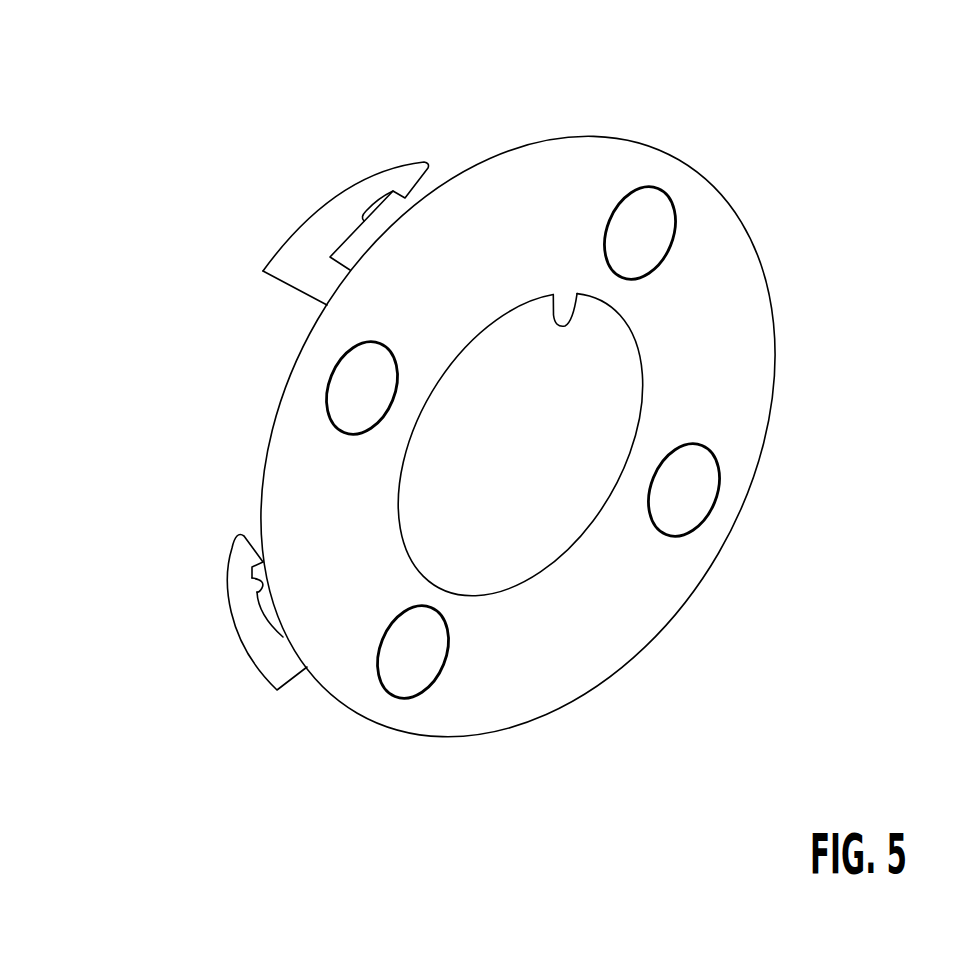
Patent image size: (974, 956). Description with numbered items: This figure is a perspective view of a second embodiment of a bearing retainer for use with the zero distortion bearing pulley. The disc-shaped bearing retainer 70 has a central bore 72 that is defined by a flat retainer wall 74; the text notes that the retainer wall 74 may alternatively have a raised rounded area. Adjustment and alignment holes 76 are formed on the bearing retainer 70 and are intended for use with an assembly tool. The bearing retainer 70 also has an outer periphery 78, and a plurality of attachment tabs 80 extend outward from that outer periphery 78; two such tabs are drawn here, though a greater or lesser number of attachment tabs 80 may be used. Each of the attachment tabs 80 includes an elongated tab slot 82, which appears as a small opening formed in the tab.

The bearing retainer 70 is at (534, 415).
The central bore 72 is at (562, 318).
The retainer wall 74 is at (578, 538).
The adjustment and alignment holes 76 is at (693, 490).
The outer periphery 78 is at (283, 378).
The attachment tabs 80 is at (328, 220).
The tab slot 82 is at (364, 213).